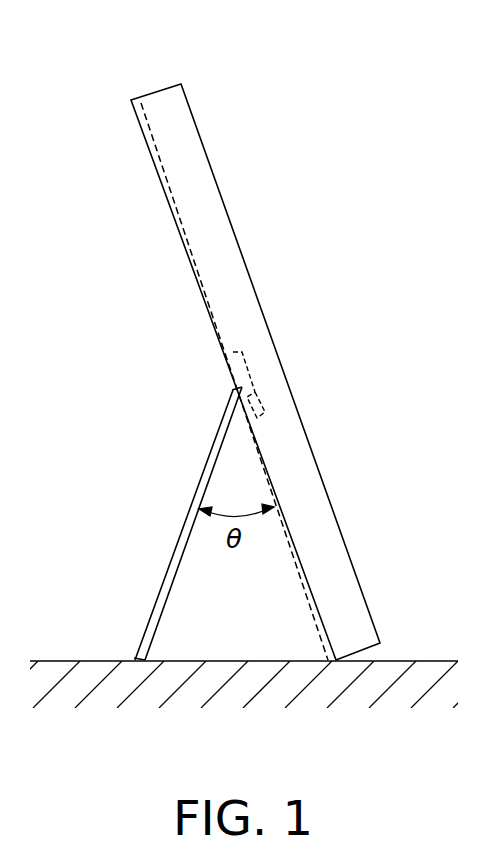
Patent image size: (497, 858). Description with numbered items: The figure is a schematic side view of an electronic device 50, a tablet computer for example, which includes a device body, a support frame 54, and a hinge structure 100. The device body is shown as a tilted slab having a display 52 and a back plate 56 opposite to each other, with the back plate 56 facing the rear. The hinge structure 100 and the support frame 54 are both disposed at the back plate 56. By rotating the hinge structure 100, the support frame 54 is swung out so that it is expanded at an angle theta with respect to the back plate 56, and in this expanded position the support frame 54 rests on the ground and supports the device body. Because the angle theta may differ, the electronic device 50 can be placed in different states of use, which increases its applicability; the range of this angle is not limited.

The electronic device 50 is at (474, 108).
The display 52 is at (219, 194).
The support frame 54 is at (303, 588).
The back plate 56 is at (218, 350).
The hinge structure 100 is at (253, 375).